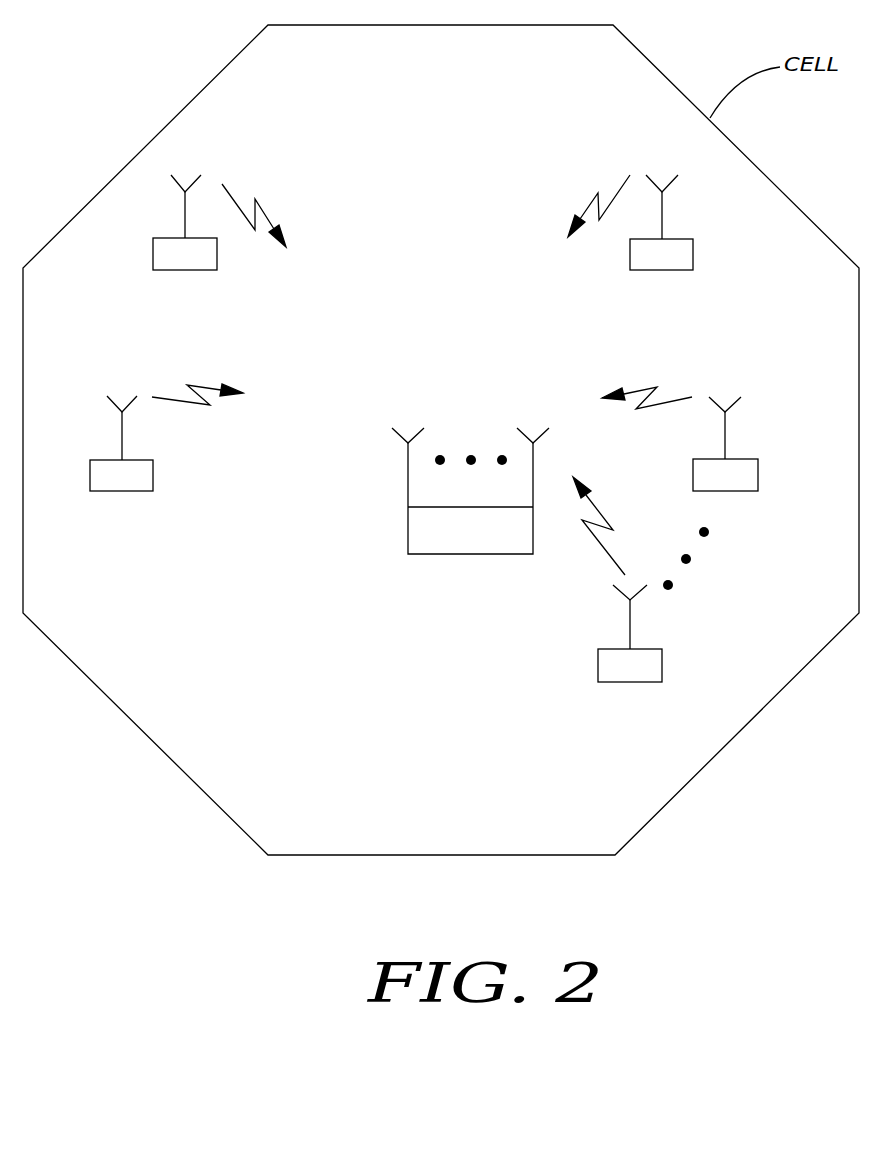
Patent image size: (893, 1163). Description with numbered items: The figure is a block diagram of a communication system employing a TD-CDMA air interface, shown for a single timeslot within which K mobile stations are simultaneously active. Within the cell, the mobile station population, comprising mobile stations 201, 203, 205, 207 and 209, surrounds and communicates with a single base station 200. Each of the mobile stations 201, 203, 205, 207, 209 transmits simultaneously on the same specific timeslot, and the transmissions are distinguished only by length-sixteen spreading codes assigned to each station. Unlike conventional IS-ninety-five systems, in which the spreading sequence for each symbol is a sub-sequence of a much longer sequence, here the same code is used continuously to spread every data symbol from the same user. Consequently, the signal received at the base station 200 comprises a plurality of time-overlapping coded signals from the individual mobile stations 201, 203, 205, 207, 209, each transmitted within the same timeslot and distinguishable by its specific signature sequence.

The base station 200 is at (408, 538).
The mobile station 201 is at (125, 491).
The mobile station 203 is at (153, 253).
The mobile station 205 is at (630, 253).
The mobile station 207 is at (757, 459).
The mobile station 209 is at (662, 663).